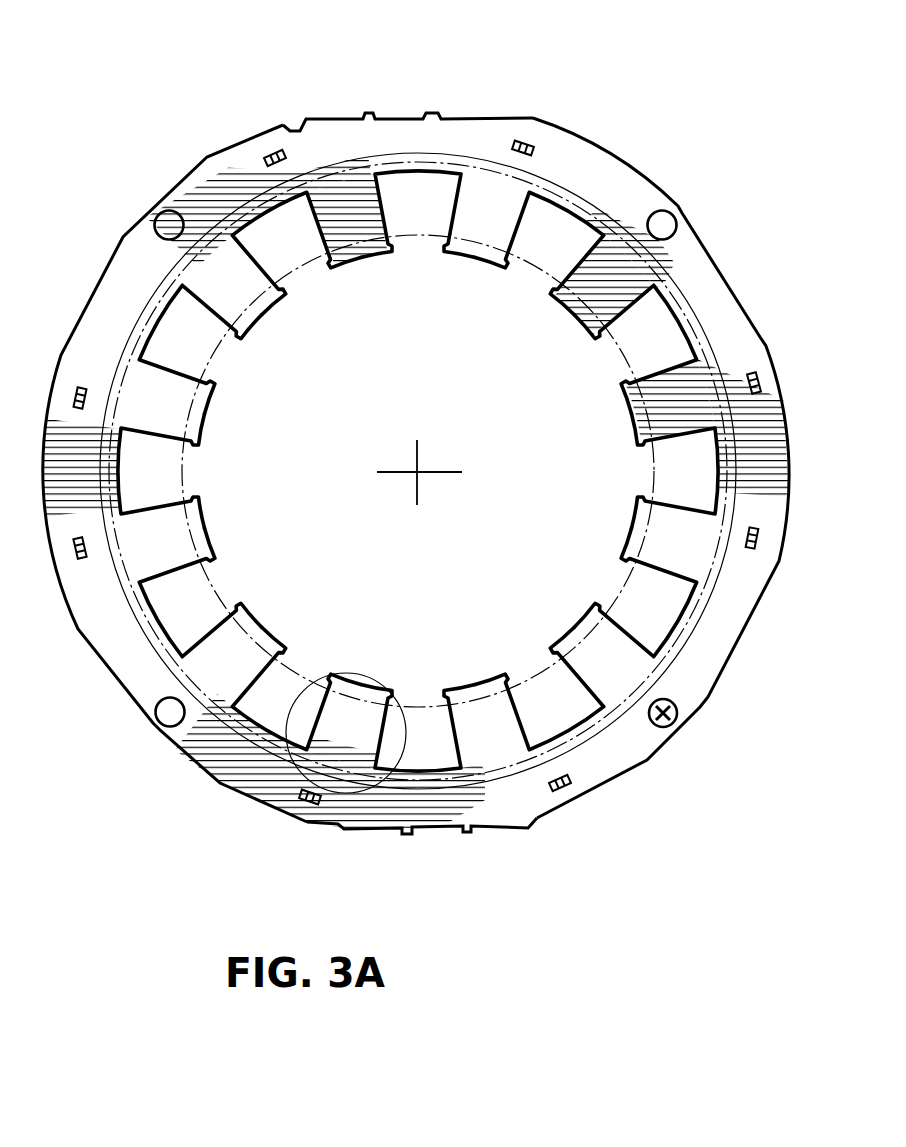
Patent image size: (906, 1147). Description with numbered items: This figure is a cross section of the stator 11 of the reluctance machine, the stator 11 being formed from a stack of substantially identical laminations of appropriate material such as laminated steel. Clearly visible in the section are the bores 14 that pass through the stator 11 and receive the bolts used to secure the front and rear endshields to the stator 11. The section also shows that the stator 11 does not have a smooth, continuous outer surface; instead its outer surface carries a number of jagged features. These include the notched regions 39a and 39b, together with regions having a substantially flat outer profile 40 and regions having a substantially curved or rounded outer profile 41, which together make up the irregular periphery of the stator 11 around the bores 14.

The stator 11 is at (207, 136).
The bore 14 is at (140, 214).
The notched region 39a is at (400, 110).
The notched region 39b is at (432, 838).
The region having a substantially flat outer profile 40 is at (738, 284).
The region having a substantially curved or rounded outer profile 41 is at (580, 134).